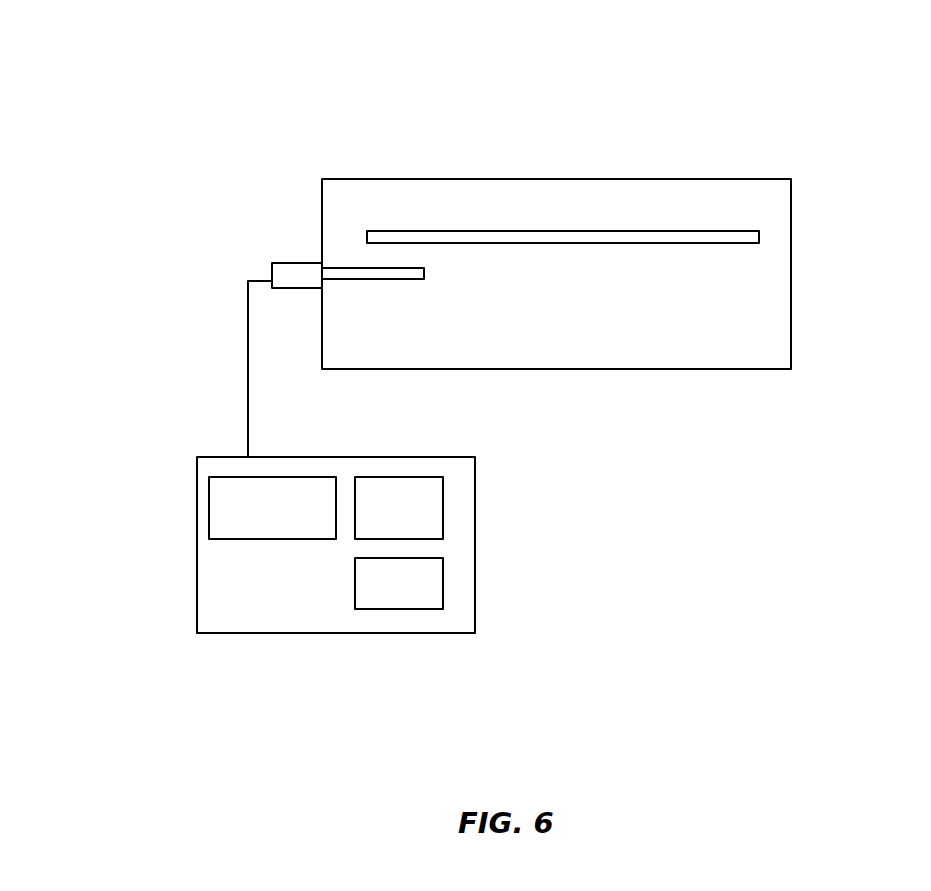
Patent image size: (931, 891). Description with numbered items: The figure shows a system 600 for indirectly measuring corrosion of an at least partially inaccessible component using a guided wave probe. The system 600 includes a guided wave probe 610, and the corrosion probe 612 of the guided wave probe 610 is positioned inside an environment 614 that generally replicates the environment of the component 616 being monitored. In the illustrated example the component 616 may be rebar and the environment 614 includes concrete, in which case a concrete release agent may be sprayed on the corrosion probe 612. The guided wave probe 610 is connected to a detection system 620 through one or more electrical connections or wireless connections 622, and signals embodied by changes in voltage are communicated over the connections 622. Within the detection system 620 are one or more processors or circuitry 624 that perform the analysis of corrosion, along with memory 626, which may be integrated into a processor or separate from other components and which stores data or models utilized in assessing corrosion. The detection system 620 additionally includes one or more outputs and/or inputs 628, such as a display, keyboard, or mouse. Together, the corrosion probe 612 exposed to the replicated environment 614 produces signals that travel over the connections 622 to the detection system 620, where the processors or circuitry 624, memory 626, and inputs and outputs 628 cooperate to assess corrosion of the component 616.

The system 600 is at (372, 104).
The guided wave probe 610 is at (298, 263).
The corrosion probe 612 is at (372, 281).
The environment 614 is at (575, 330).
The component 616 is at (626, 229).
The detection system 620 is at (373, 633).
The electrical or wireless connections 622 is at (247, 400).
The processors or circuitry 624 is at (209, 509).
The memory 626 is at (443, 509).
The outputs and/or inputs 628 is at (443, 584).